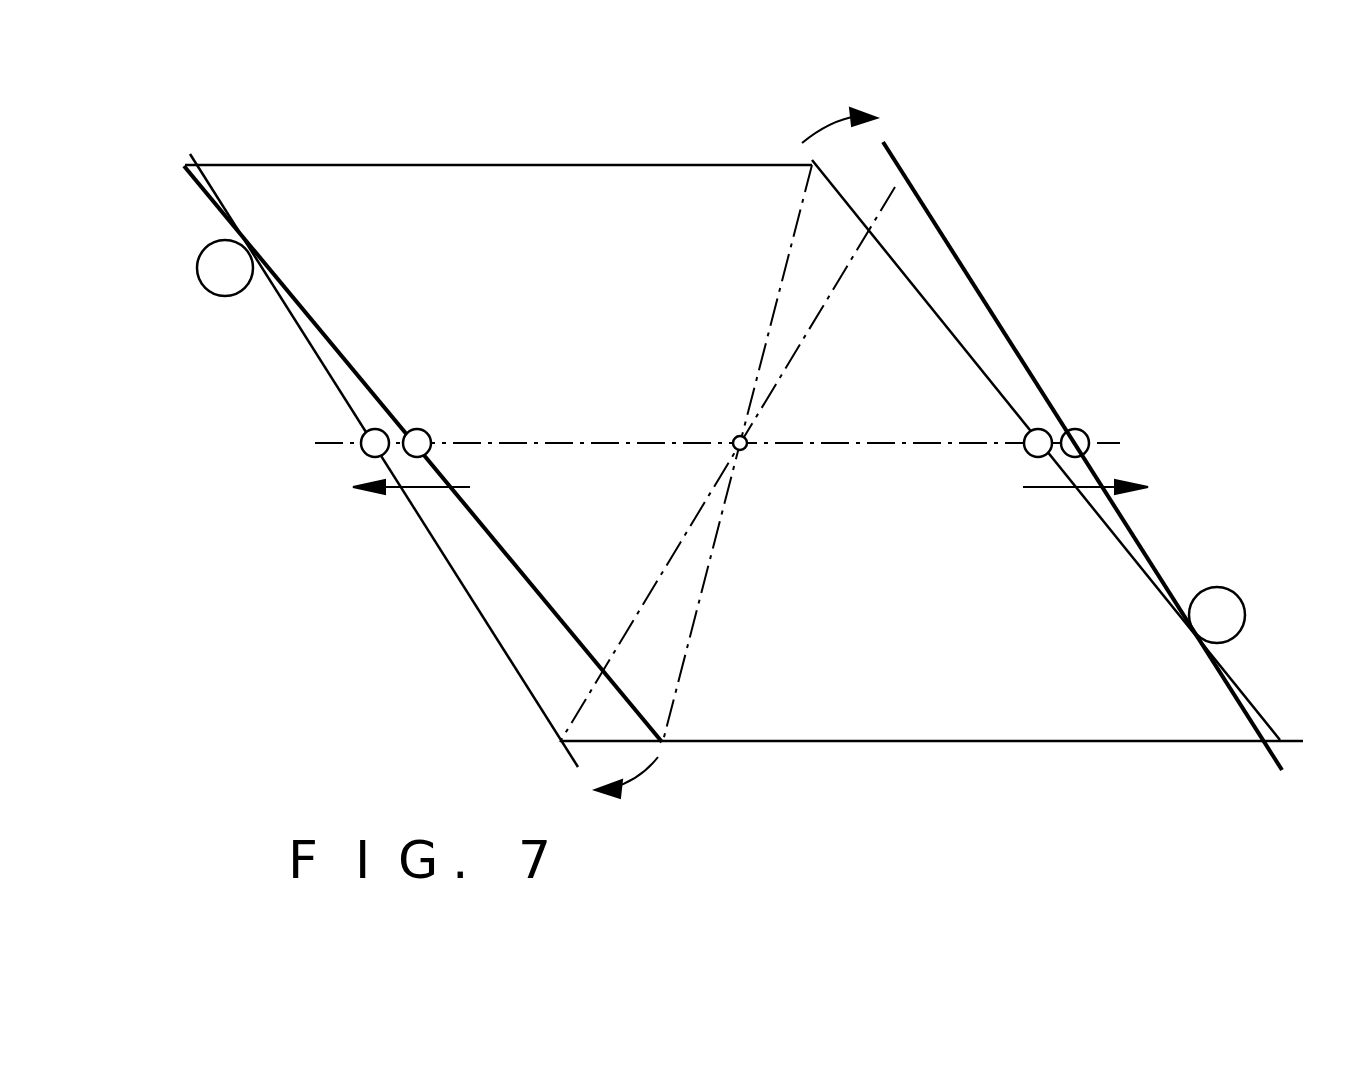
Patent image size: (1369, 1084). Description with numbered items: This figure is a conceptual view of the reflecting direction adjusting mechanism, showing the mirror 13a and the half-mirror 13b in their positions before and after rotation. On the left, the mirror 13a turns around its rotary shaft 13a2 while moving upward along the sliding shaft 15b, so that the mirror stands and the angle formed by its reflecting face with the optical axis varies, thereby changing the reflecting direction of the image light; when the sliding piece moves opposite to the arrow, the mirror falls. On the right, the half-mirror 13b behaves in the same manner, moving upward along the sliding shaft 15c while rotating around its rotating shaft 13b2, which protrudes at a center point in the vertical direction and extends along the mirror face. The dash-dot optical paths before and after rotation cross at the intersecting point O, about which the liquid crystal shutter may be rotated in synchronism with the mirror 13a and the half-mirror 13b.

The mirror 13a is at (497, 552).
The half-mirror 13b is at (917, 292).
The rotary shaft 13a2 is at (421, 431).
The rotating shaft 13b2 is at (1027, 440).
The sliding shaft 15b is at (215, 283).
The sliding shaft 15c is at (1230, 600).
The intersecting point of the optical paths O is at (748, 450).